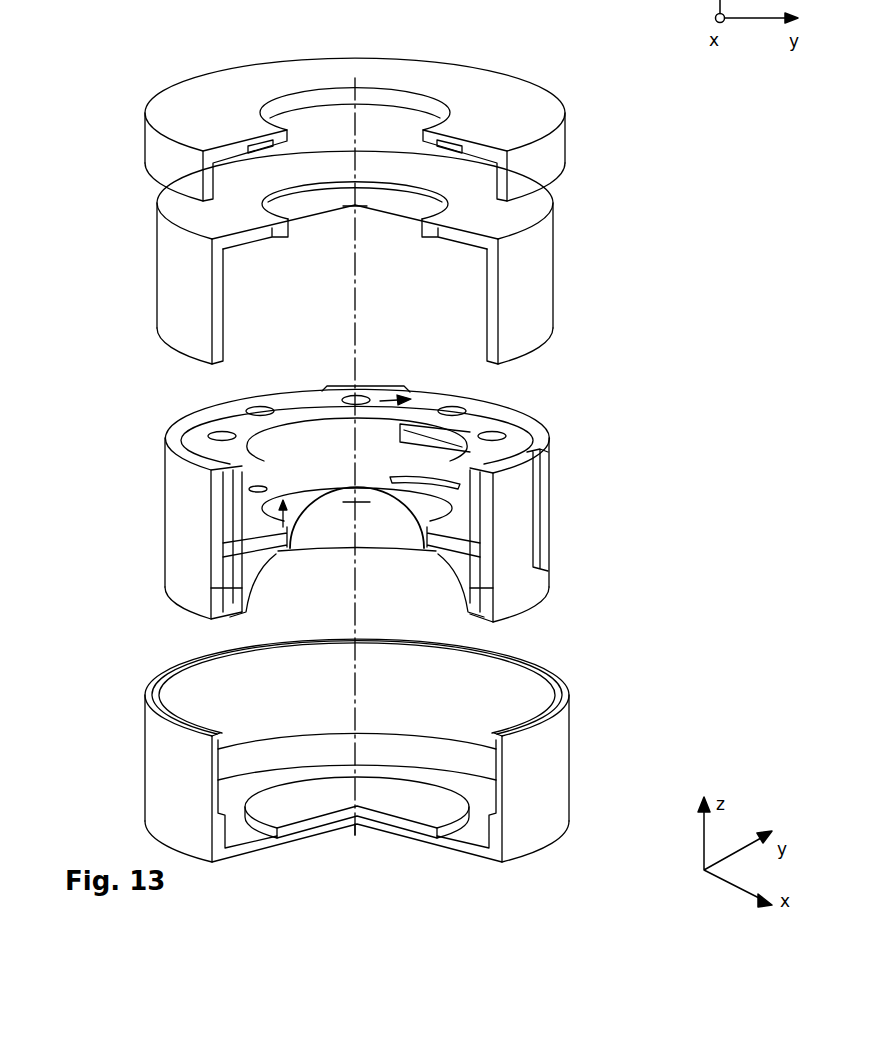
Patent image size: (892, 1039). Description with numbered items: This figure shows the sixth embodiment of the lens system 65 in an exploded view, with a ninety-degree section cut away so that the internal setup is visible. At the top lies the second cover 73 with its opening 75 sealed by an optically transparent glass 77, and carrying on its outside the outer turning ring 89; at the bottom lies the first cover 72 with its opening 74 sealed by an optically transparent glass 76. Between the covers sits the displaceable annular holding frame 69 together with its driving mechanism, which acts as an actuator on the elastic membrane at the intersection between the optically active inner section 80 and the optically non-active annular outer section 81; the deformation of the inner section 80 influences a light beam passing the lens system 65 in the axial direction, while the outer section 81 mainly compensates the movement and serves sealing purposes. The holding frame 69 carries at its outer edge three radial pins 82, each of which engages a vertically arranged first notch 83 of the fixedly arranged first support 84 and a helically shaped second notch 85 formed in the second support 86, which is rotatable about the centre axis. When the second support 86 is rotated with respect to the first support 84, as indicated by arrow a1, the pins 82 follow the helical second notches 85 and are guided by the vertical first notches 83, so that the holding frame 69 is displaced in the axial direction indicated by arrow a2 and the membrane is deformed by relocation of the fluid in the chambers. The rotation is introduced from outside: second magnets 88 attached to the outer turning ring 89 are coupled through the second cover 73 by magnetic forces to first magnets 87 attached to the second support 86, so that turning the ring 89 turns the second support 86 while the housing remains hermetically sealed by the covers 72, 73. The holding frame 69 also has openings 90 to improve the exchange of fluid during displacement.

The lens system 65 is at (131, 70).
The second cover 73 is at (180, 208).
The opening 74 is at (372, 172).
The opening 75 is at (371, 843).
The optically transparent glass 76 is at (430, 797).
The optically transparent glass 77 is at (293, 207).
The first cover 72 is at (542, 802).
The outer turning ring 89 is at (557, 138).
The second magnets 88 is at (462, 149).
The inner section 80 is at (455, 508).
The outer section 81 is at (253, 562).
The radial pins 82 is at (290, 466).
The first notch 83 is at (213, 530).
The first support 84 is at (180, 580).
The second notch 85 is at (300, 480).
The second support 86 is at (195, 432).
The first magnets 87 is at (495, 433).
The openings 90 is at (470, 462).
The holding frame 69 is at (247, 520).
The arrow a1 is at (403, 383).
The arrow a2 is at (272, 515).